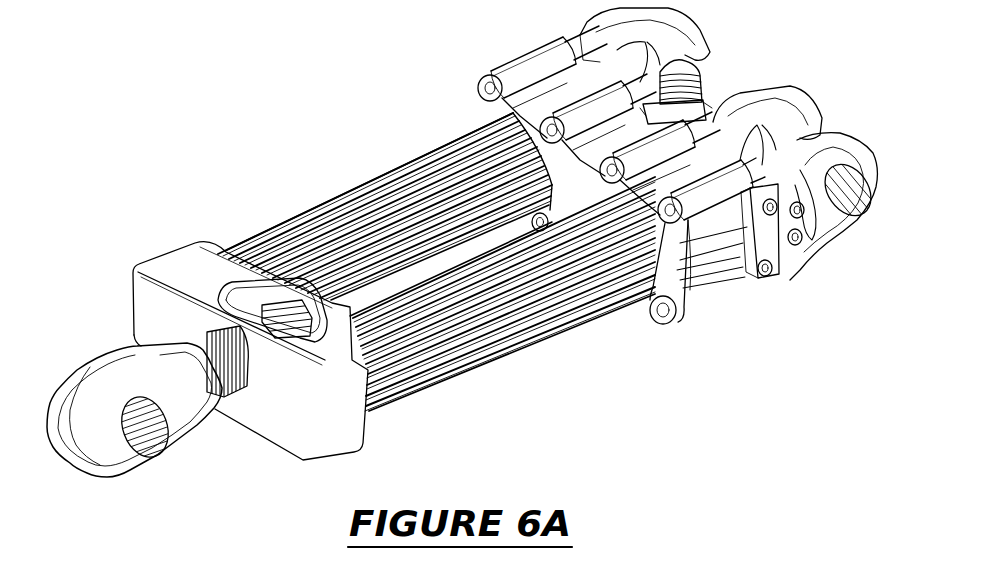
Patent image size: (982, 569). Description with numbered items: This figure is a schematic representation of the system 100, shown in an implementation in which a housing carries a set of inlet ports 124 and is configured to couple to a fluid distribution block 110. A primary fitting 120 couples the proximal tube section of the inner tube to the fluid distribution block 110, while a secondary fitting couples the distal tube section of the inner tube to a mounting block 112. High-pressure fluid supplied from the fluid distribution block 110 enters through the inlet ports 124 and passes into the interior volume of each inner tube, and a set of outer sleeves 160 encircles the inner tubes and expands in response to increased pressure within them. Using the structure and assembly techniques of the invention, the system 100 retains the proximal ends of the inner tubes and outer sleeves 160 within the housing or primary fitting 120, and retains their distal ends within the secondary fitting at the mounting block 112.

The system 100 is at (140, 114).
The fluid distribution block 110 is at (777, 260).
The mounting block 112 is at (137, 290).
The fitting 120 is at (533, 57).
The inlet port 124 is at (700, 50).
The outer sleeve 160 is at (382, 172).